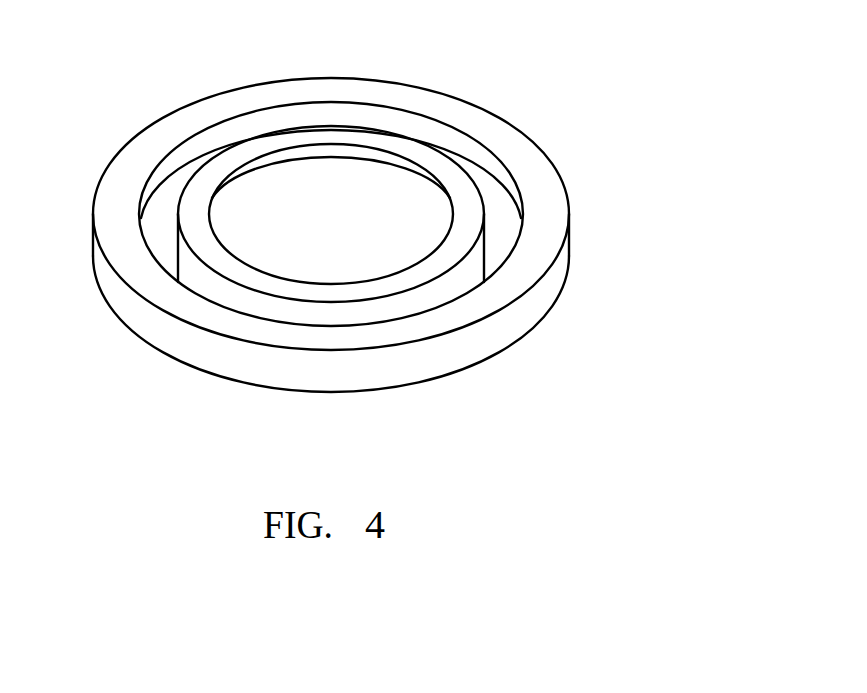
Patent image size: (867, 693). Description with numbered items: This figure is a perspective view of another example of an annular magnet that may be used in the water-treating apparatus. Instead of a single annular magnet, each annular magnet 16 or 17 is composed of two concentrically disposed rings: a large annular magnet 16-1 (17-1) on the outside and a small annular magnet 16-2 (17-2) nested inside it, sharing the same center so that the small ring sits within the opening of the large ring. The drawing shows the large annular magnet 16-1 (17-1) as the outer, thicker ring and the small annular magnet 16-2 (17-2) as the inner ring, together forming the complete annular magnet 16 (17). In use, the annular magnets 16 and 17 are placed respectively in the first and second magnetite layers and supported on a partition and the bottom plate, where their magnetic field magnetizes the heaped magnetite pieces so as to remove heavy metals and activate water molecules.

The annular magnet 16 is at (408, 205).
The annular magnet 17 is at (408, 205).
The large annular magnet 16-1 is at (400, 235).
The large annular magnet 17-1 is at (500, 130).
The small annular magnet 16-2 is at (331, 160).
The small annular magnet 17-2 is at (348, 136).